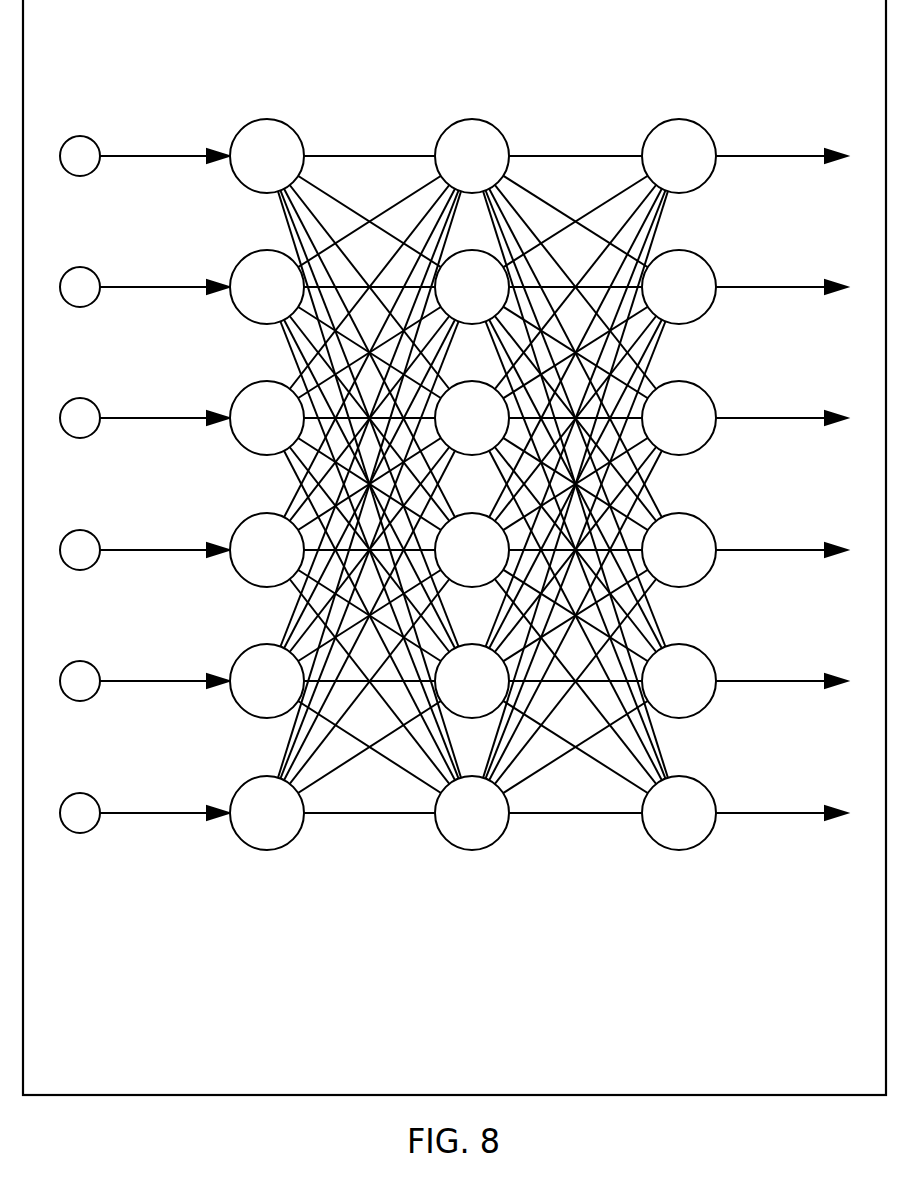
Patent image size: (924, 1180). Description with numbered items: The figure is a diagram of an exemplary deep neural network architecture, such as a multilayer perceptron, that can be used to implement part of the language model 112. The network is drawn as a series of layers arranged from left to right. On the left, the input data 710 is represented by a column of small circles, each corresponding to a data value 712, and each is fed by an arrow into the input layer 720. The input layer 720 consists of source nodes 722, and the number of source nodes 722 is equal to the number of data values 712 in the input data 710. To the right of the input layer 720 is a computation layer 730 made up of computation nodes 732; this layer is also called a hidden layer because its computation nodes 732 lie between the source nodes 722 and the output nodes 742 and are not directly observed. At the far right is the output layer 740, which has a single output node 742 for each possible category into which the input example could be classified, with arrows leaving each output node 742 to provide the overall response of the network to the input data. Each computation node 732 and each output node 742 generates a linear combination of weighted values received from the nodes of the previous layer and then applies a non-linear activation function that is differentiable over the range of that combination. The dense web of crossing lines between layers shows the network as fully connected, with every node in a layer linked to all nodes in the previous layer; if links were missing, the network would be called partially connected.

The input data 710 is at (146, 502).
The data value 712 is at (80, 822).
The input layer 720 is at (325, 505).
The source node 722 is at (267, 840).
The computation layer 730 is at (530, 505).
The computation node 732 is at (472, 840).
The output layer 740 is at (738, 504).
The output node 742 is at (679, 840).
The language model 112 is at (478, 1082).